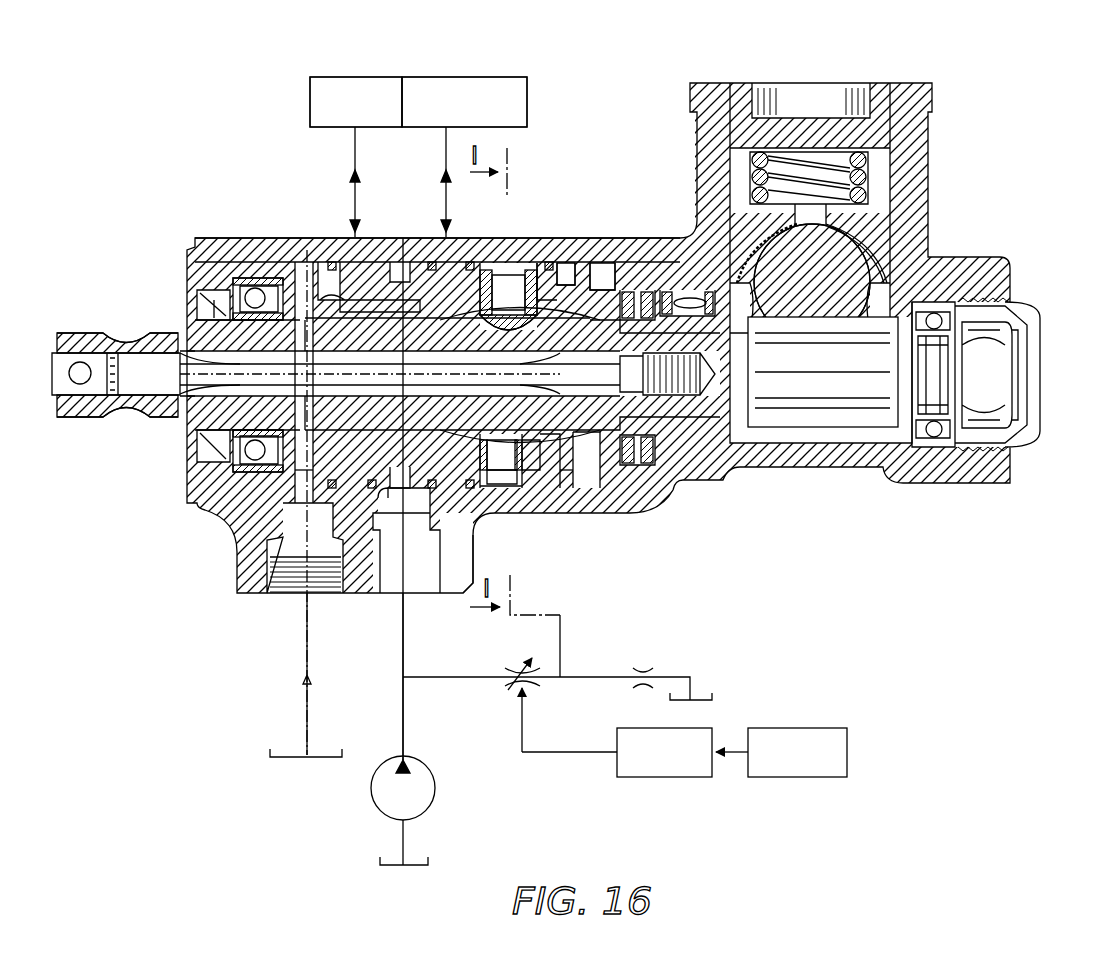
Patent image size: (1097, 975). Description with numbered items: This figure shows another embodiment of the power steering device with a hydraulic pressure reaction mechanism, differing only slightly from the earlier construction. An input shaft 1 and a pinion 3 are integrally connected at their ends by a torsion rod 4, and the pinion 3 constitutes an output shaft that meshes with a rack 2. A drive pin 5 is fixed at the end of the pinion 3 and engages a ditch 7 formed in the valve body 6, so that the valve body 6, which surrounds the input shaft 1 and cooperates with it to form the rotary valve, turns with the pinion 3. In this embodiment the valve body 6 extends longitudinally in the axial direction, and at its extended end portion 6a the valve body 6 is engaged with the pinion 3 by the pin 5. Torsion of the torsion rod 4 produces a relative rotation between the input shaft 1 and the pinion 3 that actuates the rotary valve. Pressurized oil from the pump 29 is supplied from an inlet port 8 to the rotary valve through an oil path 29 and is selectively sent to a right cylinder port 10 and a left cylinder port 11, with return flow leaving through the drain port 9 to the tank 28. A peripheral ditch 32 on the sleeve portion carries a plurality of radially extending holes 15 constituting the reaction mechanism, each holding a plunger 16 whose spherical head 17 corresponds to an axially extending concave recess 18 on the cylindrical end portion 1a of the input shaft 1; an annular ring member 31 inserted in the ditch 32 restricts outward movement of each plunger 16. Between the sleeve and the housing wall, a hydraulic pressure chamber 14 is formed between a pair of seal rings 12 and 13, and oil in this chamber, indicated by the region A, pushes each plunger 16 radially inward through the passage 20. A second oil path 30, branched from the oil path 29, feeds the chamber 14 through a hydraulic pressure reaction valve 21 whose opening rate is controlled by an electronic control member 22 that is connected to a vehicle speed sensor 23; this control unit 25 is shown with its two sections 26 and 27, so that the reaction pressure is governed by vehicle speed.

The input shaft 1 is at (80, 331).
The rotor portion 1a is at (305, 300).
The rack 2 is at (850, 262).
The pinion 3 is at (820, 395).
The torsion rod 4 is at (135, 358).
The drive pin 5 is at (583, 466).
The valve body 6 is at (335, 320).
The rotor flange 6a is at (585, 300).
The ditch 7 is at (545, 432).
The inlet port 8 is at (398, 600).
The drain port 9 is at (300, 600).
The right cylinder port 10 is at (348, 233).
The left cylinder port 11 is at (438, 233).
The seal ring 12 is at (465, 262).
The seal ring 13 is at (560, 300).
The hydraulic pressure chamber 14 is at (535, 265).
The holes 15 is at (494, 462).
The plunger 16 is at (502, 462).
The spherical head 17 is at (535, 432).
The concave recess 18 is at (575, 482).
The passage 20 is at (300, 475).
The hydraulic pressure reaction valve 21 is at (540, 683).
The electronic control member 22 is at (660, 778).
The vehicle speed sensor 23 is at (792, 778).
The control unit 25 is at (402, 77).
The control section 26 is at (333, 85).
The control section 27 is at (472, 85).
The tank 28 is at (290, 758).
The oil path 29 is at (403, 724).
The oil path 30 is at (458, 675).
The annular ring member 31 is at (505, 265).
The peripheral ditch 32 is at (230, 234).
The chamber A is at (522, 498).